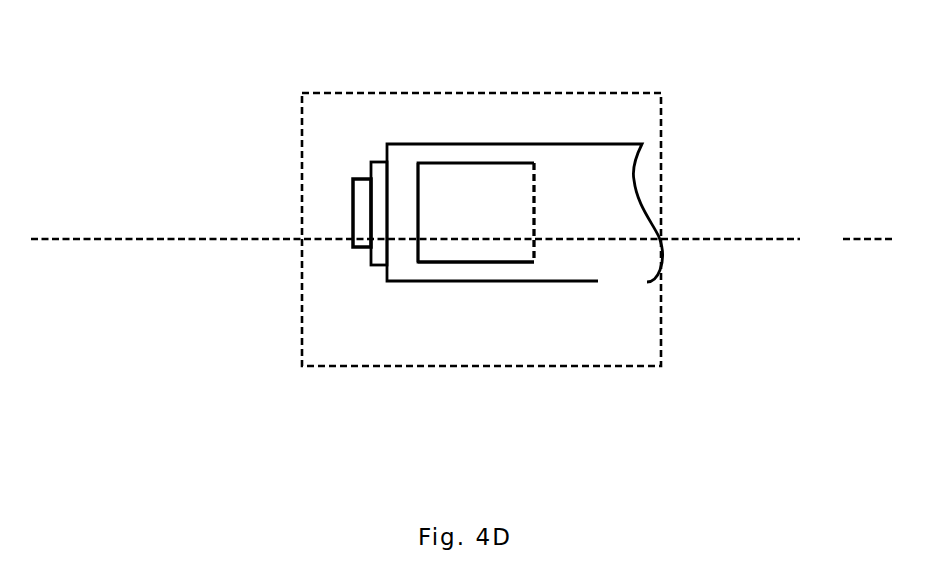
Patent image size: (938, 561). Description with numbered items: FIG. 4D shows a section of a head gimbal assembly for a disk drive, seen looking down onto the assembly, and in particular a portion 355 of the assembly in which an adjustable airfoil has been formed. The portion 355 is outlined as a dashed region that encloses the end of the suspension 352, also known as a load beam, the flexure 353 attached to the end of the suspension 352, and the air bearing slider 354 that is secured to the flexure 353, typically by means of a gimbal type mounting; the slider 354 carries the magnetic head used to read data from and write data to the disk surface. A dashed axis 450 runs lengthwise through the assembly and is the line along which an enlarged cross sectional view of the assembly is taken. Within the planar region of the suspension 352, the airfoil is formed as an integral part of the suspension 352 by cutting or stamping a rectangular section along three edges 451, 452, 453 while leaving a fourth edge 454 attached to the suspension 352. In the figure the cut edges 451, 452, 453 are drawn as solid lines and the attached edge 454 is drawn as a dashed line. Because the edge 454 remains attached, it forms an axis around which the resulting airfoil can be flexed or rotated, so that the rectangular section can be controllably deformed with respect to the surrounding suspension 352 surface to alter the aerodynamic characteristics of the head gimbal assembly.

The suspension 352 is at (613, 162).
The flexure 353 is at (371, 162).
The air bearing slider 354 is at (352, 213).
The portion of head gimbal assembly 355 is at (482, 366).
The axis 450 is at (462, 239).
The edge 451 is at (477, 163).
The edge 452 is at (422, 213).
The edge 453 is at (475, 262).
The edge 454 is at (535, 213).